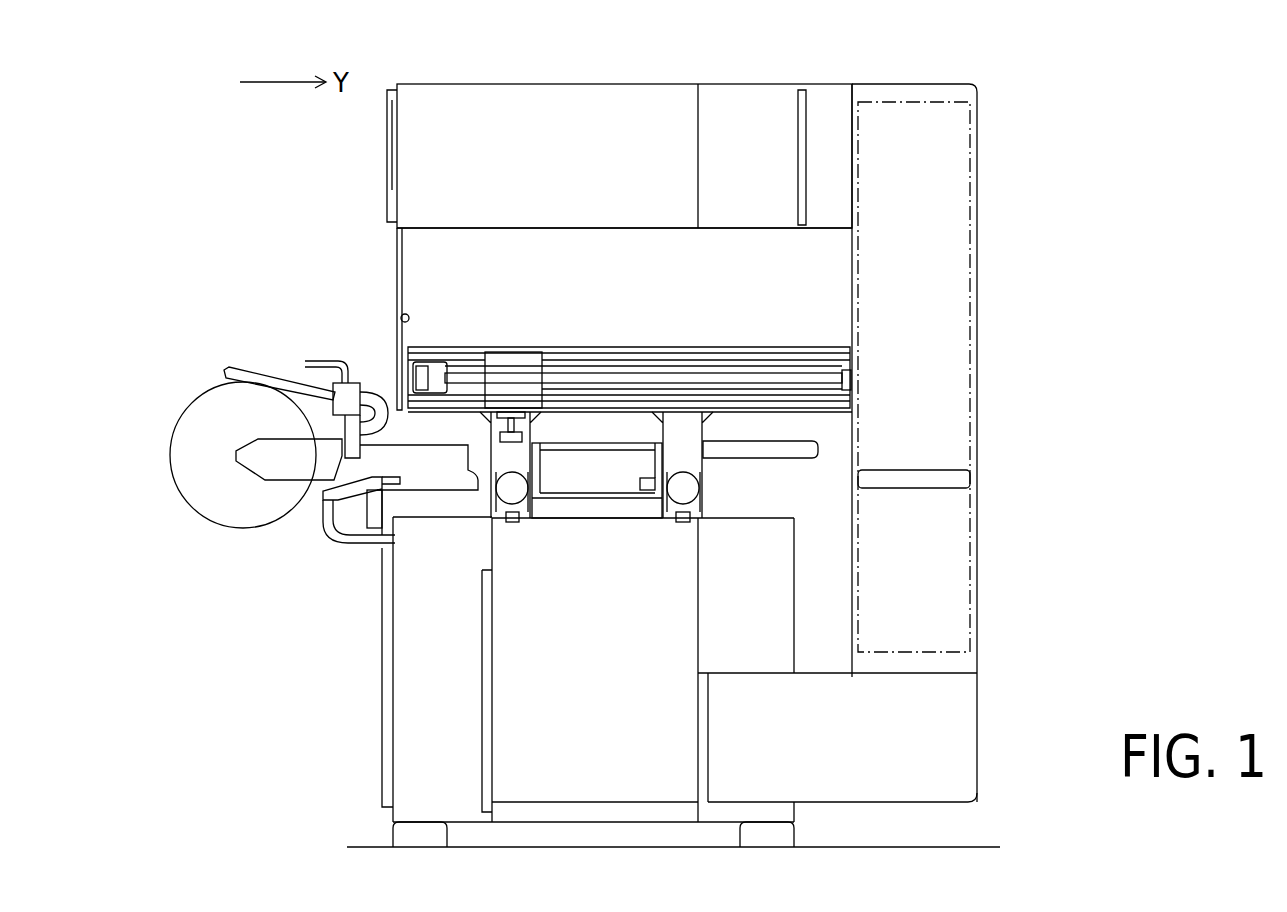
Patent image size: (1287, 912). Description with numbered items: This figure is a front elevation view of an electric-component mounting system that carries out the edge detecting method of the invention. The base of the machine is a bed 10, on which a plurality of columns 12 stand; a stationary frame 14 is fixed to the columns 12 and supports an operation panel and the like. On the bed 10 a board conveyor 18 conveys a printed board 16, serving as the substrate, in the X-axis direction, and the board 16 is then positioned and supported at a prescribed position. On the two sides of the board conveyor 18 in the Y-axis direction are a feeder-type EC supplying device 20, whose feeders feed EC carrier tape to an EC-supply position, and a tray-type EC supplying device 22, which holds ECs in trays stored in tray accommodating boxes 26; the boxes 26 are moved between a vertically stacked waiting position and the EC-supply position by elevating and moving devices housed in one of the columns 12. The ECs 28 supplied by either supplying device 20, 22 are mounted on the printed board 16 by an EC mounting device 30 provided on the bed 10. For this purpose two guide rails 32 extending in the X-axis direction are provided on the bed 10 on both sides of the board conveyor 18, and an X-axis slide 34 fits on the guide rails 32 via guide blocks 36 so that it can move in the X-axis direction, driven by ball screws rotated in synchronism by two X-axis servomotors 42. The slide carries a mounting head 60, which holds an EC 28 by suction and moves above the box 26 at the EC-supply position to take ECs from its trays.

The bed 10 is at (400, 806).
The columns 12 is at (976, 93).
The stationary frame 14 is at (623, 218).
The printed board 16 is at (568, 445).
The board conveyor 18 is at (603, 515).
The feeder-type EC supplying device 20 is at (245, 345).
The tray-type EC supplying device 22 is at (1015, 556).
The tray accommodating boxes 26 is at (962, 478).
The ECs 28 is at (500, 436).
The EC mounting device 30 is at (572, 322).
The guide rails 32 is at (515, 522).
The X-axis slide 34 is at (588, 347).
The guide blocks 36 is at (497, 512).
The X-axis servomotors 42 is at (520, 504).
The mounting head 60 is at (528, 368).